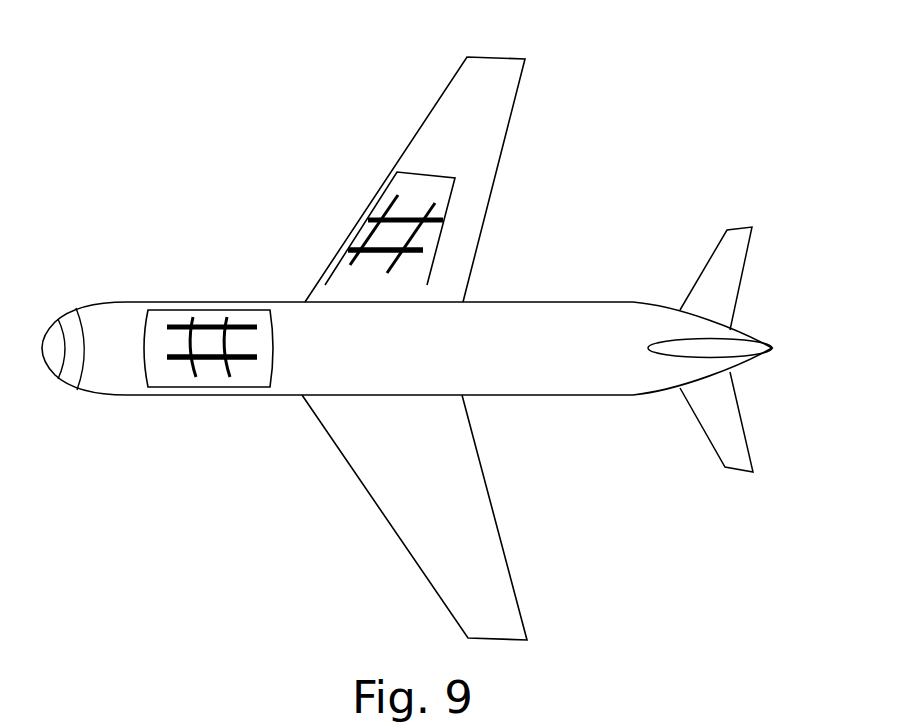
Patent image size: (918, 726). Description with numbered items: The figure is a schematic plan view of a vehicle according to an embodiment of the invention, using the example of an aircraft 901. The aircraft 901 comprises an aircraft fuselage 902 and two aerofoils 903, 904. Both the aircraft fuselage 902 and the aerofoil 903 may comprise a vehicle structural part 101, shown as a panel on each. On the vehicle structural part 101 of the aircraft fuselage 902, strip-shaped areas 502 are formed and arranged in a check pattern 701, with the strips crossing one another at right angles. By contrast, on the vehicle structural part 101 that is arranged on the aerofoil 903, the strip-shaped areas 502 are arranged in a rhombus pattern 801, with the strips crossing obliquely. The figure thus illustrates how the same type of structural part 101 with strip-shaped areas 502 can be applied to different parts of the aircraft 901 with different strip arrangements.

The vehicle structural part 101 is at (260, 335).
The strip-shaped areas 502 is at (212, 360).
The check pattern 701 is at (262, 342).
The rhombus pattern 801 is at (428, 190).
The aircraft 901 is at (692, 137).
The aircraft fuselage 902 is at (293, 377).
The aerofoil 903 is at (510, 77).
The aerofoil 904 is at (484, 535).